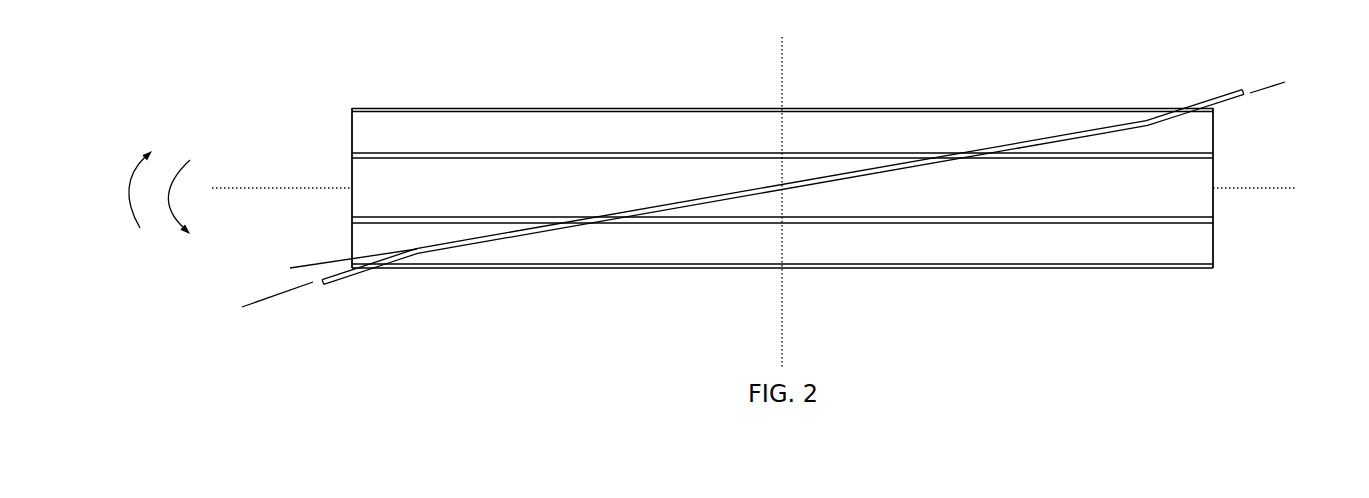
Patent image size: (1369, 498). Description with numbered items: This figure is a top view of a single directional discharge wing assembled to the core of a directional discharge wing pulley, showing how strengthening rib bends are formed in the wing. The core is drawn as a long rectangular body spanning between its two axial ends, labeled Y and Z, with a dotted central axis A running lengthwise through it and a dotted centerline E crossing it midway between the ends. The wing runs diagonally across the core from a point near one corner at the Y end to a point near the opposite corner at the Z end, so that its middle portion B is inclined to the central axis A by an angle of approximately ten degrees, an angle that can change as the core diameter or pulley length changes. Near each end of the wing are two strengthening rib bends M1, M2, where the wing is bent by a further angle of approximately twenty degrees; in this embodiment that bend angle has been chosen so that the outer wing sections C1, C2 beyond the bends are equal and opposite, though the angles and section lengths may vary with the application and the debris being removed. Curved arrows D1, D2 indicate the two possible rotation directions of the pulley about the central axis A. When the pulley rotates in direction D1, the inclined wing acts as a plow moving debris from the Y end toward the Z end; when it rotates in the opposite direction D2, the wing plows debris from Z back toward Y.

The central axis A is at (758, 187).
The centerline E is at (783, 189).
The Y end of the pulley Y is at (373, 149).
The Z end of the pulley Z is at (1187, 149).
The bar middle portion B is at (742, 196).
The strengthening rib bend M1 is at (418, 252).
The strengthening rib bend M2 is at (1147, 126).
The wing section C1 is at (363, 272).
The wing section C2 is at (1198, 109).
The direction D1 is at (173, 183).
The direction D2 is at (164, 205).